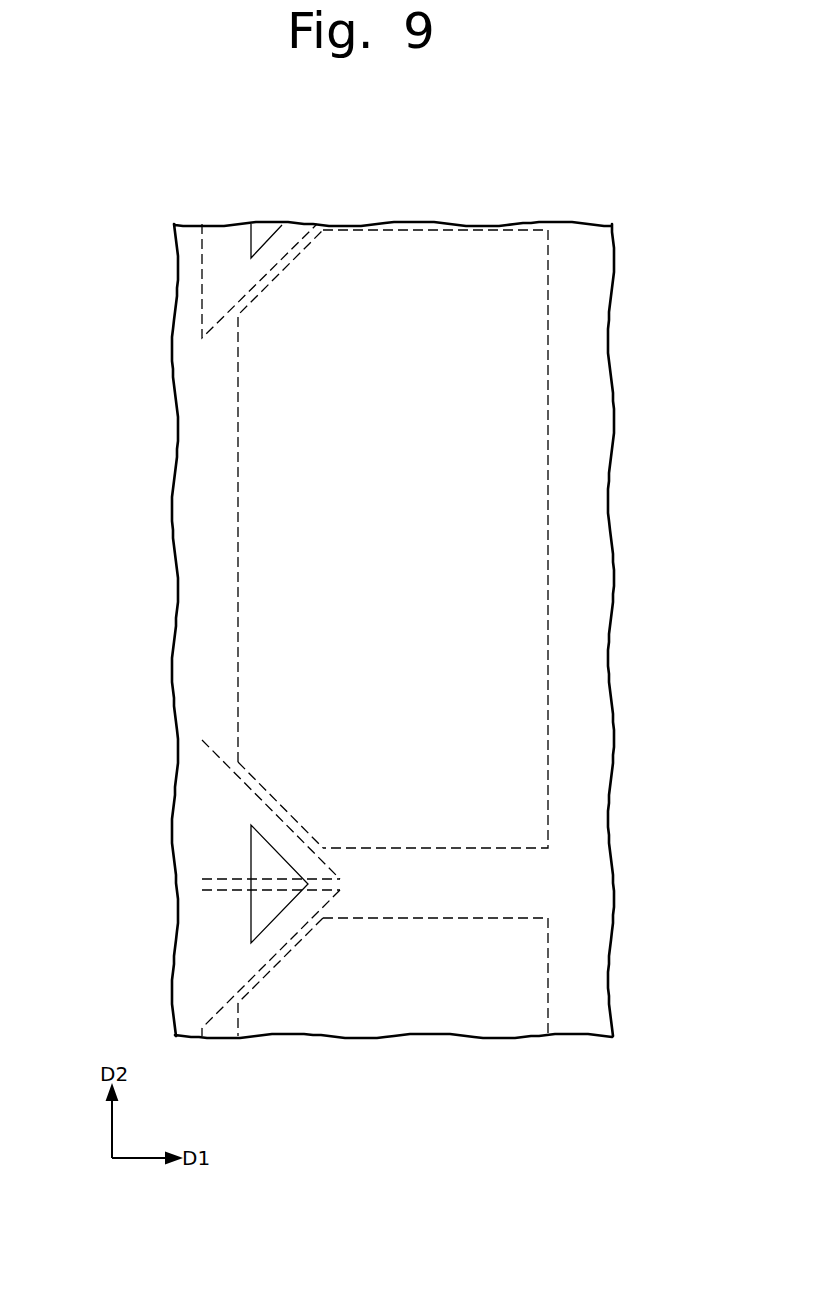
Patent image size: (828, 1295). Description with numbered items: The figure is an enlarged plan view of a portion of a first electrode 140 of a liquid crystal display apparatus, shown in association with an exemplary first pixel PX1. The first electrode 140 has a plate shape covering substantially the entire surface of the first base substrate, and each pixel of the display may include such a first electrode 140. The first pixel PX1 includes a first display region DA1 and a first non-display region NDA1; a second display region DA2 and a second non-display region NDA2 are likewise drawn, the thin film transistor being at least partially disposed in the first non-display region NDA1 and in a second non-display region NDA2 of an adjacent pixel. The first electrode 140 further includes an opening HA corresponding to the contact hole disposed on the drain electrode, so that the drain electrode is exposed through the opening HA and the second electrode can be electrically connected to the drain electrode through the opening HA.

The first electrode 140 is at (188, 571).
The first pixel PX1 is at (552, 262).
The first display region DA1 is at (237, 411).
The second display area DA2 is at (238, 1022).
The first non-display region NDA1 is at (202, 803).
The second non-display area NDA2 is at (202, 937).
The opening HA is at (250, 879).